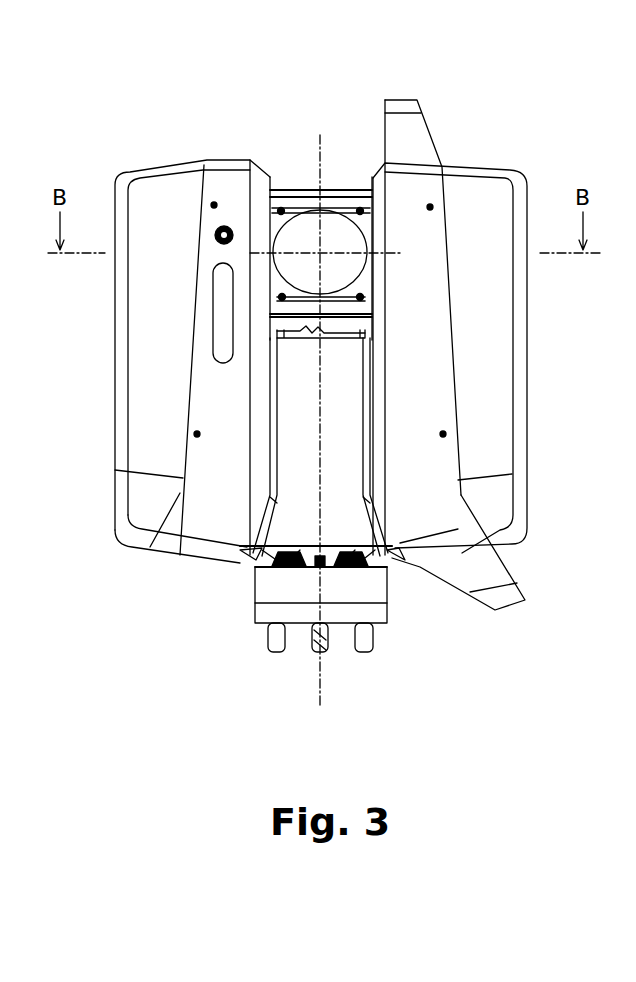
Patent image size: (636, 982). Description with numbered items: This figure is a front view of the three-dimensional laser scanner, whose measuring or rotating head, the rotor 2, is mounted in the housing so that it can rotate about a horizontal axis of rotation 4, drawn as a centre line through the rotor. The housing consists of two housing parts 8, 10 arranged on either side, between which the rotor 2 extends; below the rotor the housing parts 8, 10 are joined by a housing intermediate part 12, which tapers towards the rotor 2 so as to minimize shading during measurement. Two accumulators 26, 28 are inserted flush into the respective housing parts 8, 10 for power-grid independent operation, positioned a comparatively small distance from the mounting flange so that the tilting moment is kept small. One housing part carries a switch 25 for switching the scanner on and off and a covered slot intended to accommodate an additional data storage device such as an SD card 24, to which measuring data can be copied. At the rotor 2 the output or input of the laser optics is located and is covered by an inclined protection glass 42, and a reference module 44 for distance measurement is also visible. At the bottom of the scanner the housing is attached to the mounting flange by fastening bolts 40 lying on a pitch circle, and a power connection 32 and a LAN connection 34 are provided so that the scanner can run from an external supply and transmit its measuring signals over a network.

The rotor 2 is at (348, 190).
The horizontal axis of rotation 4 is at (370, 255).
The housing part 8 is at (502, 340).
The housing part 10 is at (153, 371).
The housing intermediate part 12 is at (314, 459).
The SD card 24 is at (214, 325).
The switch 25 is at (214, 235).
The accumulator 26 is at (503, 508).
The accumulator 28 is at (142, 502).
The power connection 32 is at (357, 594).
The LAN connection 34 is at (277, 600).
The fastening bolt 40 is at (368, 655).
The inclined protection glass 42 is at (305, 232).
The reference module 44 is at (363, 330).